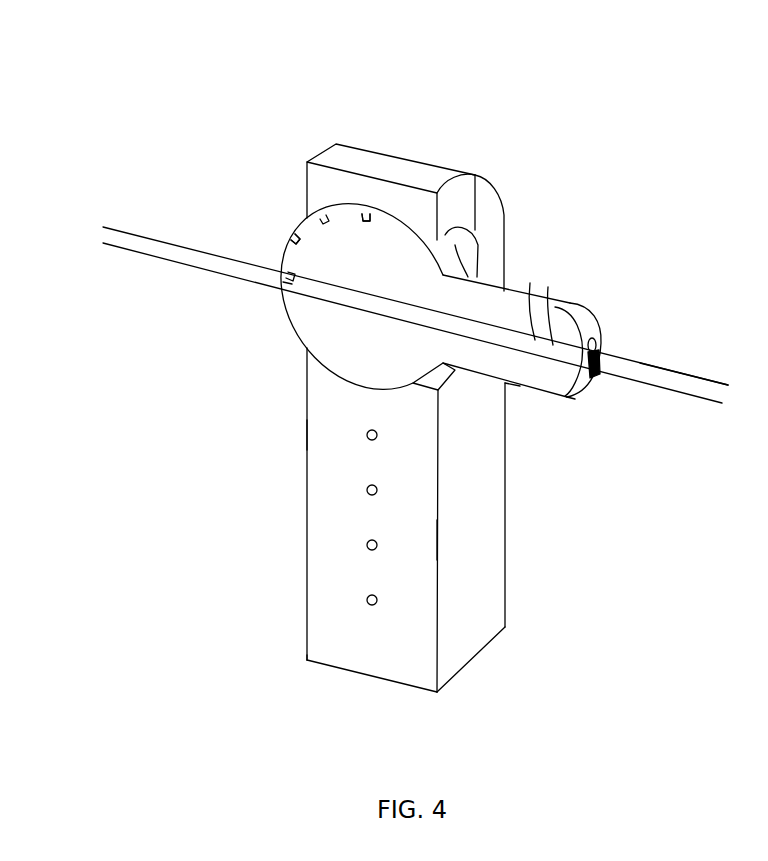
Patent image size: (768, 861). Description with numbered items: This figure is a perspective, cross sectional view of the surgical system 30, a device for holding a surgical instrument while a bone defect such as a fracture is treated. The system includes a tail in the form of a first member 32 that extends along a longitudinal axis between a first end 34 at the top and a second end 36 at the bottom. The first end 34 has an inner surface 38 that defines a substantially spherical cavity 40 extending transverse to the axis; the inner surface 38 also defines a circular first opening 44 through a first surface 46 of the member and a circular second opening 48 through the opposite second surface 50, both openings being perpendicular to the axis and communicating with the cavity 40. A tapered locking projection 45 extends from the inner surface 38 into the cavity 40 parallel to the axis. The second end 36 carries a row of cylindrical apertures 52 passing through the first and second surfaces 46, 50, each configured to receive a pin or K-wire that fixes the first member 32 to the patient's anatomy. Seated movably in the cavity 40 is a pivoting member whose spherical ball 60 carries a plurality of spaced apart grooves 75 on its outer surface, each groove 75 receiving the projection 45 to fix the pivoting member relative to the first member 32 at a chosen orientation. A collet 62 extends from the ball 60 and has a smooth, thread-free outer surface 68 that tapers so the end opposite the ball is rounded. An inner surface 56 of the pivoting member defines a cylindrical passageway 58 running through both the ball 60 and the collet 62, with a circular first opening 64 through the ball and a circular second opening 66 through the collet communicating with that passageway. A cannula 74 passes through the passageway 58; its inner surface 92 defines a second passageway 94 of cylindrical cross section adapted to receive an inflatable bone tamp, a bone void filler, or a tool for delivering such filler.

The surgical system 30 is at (613, 563).
The first member 32 is at (216, 437).
The first end 34 is at (336, 144).
The second end 36 is at (333, 650).
The inner surface 38 is at (475, 176).
The spherical cavity 40 is at (495, 237).
The first opening 44 is at (463, 402).
The projection 45 is at (372, 200).
The first surface 46 is at (482, 535).
The second opening 48 is at (286, 213).
The second surface 50 is at (307, 527).
The cylindrical aperture 52 is at (366, 440).
The inner surface 56 is at (535, 340).
The passageway 58 is at (557, 310).
The ball 60 is at (309, 333).
The collet 62 is at (574, 400).
The first opening 64 is at (264, 297).
The second opening 66 is at (614, 332).
The outer surface 68 is at (518, 386).
The cannula 74 is at (699, 345).
The grooves 75 is at (368, 192).
The inner surface 92 is at (103, 228).
The second passageway 94 is at (648, 378).